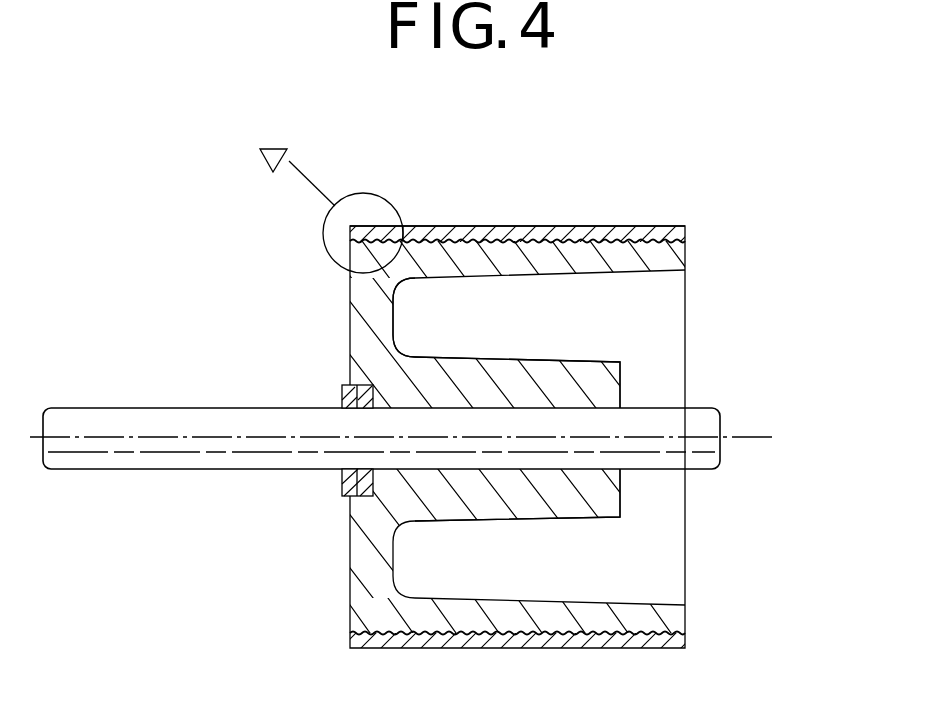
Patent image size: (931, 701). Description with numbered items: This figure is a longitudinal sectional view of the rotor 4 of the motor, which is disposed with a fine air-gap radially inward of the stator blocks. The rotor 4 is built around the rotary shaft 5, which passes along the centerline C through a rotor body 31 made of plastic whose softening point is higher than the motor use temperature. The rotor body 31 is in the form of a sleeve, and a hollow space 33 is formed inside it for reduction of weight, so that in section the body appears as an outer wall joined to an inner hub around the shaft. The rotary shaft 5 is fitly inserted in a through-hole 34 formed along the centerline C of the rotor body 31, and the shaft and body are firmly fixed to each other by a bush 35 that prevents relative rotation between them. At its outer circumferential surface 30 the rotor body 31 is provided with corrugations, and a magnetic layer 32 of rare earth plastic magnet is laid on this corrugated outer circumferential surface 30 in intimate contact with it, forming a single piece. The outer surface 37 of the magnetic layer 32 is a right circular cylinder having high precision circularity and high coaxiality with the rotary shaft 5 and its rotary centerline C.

The rotor 4 is at (679, 117).
The outer circumferential surface 30 is at (462, 225).
The outer surface 37 is at (540, 225).
The magnetic layer 32 is at (640, 221).
The hollow space 33 is at (583, 324).
The rotor body 31 is at (630, 374).
The rotary shaft 5 is at (175, 407).
The centerline C is at (420, 437).
The through-hole 34 is at (587, 468).
The bush 35 is at (345, 396).